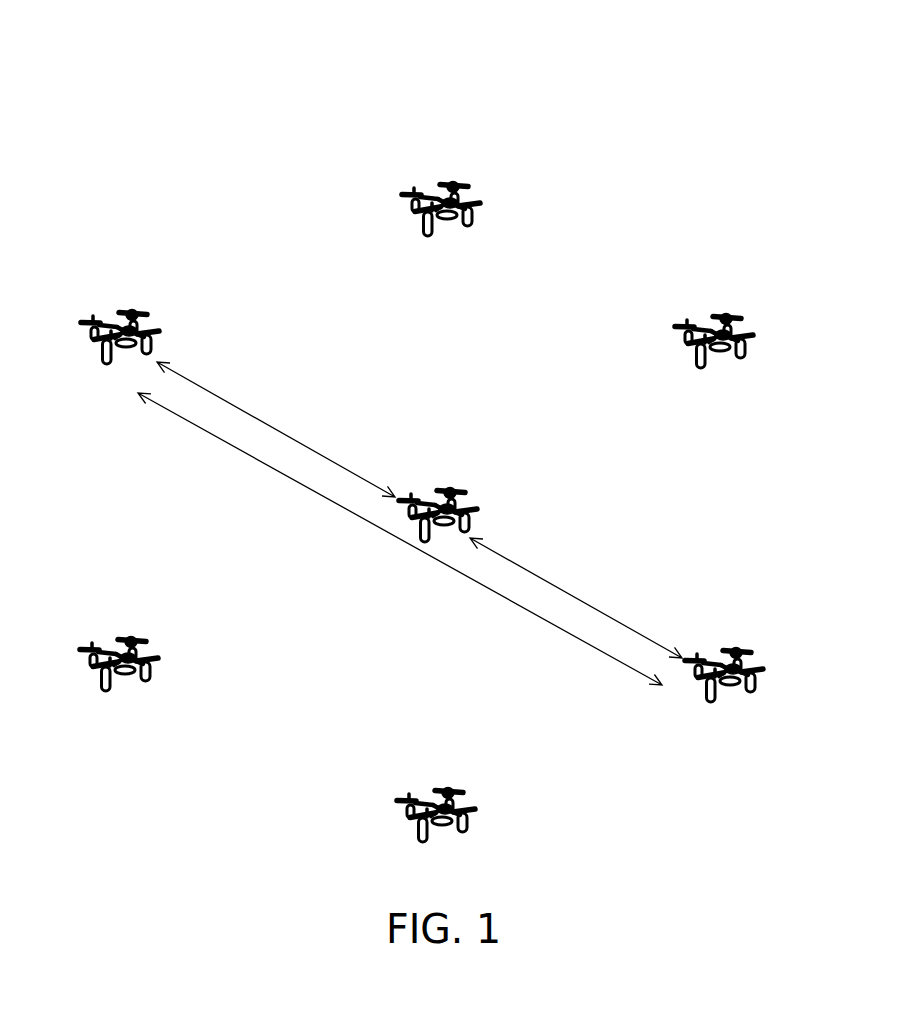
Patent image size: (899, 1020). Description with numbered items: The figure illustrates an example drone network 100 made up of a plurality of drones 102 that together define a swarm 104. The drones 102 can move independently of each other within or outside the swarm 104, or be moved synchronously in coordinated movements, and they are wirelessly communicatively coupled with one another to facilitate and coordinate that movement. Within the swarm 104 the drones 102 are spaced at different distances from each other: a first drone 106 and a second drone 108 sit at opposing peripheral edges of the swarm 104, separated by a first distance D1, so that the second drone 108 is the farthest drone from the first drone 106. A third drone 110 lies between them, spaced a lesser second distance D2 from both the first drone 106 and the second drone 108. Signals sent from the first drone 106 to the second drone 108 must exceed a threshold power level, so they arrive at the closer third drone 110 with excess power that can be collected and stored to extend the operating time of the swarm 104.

The drone network 100 is at (703, 102).
The drones 102 is at (457, 183).
The swarm 104 is at (703, 173).
The first drone 106 is at (138, 312).
The second drone 108 is at (745, 650).
The third drone 110 is at (456, 495).
The first distance D1 is at (482, 585).
The second distance D2 is at (287, 437).